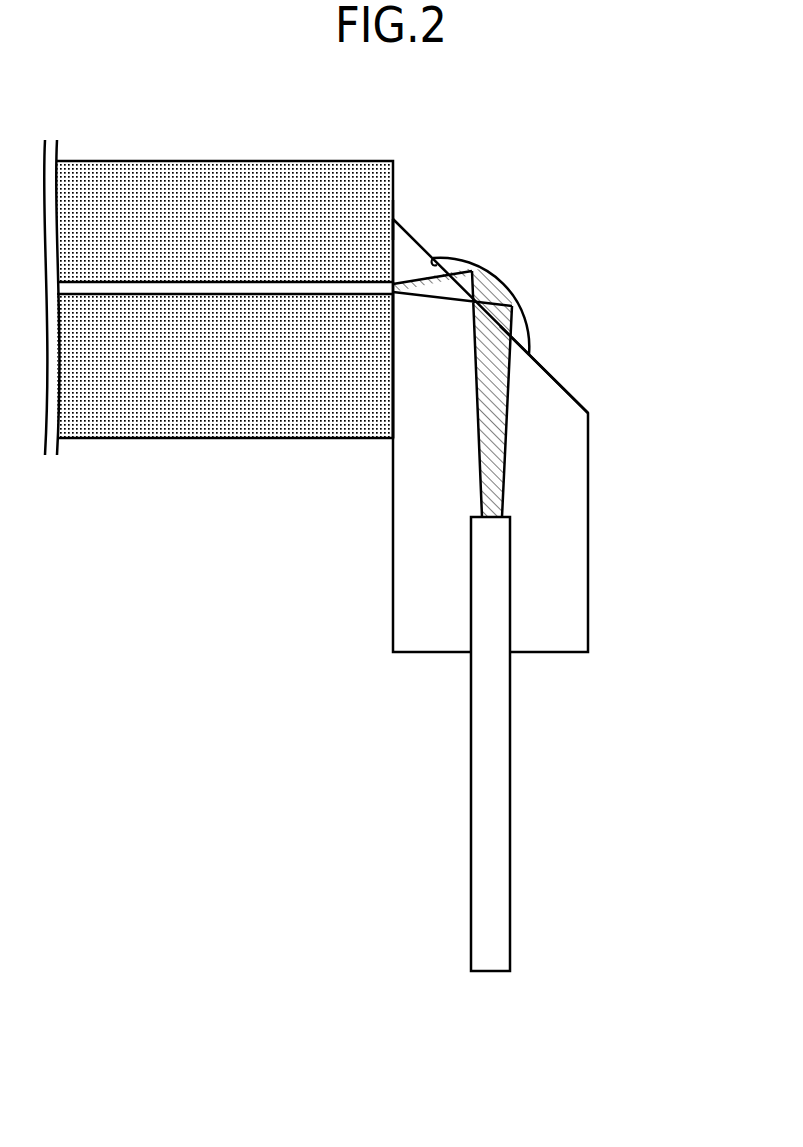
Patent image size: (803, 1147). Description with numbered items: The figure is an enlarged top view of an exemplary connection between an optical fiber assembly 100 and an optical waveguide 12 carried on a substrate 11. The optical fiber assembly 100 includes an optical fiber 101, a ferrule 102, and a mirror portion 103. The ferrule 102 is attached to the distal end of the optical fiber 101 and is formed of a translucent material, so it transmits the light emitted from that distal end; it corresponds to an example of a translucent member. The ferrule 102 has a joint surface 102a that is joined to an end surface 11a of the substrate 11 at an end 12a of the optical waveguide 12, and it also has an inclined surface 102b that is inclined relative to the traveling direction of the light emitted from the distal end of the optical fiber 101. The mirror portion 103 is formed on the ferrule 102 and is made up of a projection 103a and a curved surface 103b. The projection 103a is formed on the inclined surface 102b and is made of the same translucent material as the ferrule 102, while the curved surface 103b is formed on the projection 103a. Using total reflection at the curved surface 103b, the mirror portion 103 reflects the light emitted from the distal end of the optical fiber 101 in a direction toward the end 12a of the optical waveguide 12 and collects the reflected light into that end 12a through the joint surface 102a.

The substrate 11 is at (276, 180).
The end surface of the substrate 11a is at (394, 424).
The optical waveguide 12 is at (165, 290).
The end of the optical waveguide 12a is at (395, 292).
The optical fiber assembly 100 is at (620, 523).
The optical fiber 101 is at (510, 822).
The ferrule 102 is at (588, 618).
The joint surface 102a is at (392, 238).
The inclined surface 102b is at (562, 379).
The mirror portion 103 is at (640, 297).
The projection 103a is at (517, 337).
The curved surface 103b is at (523, 314).